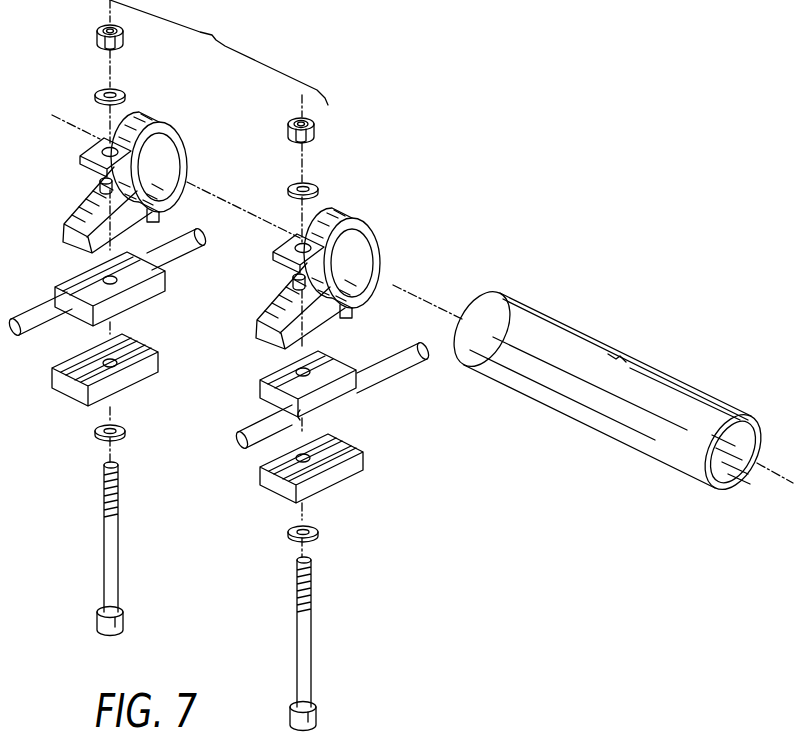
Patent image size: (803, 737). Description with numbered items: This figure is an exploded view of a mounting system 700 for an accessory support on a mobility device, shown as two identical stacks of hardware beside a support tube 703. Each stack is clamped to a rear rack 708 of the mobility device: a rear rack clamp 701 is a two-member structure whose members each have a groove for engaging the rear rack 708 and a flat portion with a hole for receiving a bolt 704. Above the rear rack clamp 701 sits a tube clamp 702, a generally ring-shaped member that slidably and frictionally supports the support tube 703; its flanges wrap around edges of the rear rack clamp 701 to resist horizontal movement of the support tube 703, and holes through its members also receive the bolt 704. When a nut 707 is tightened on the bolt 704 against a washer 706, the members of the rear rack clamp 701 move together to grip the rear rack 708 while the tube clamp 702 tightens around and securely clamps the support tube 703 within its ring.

The mounting system 700 is at (204, 573).
The rear rack clamp 701 is at (340, 408).
The tube clamp 702 is at (383, 250).
The support tube 703 is at (597, 338).
The bolt 704 is at (313, 673).
The washer 706 is at (322, 188).
The nut 707 is at (320, 127).
The rear rack 708 is at (405, 377).